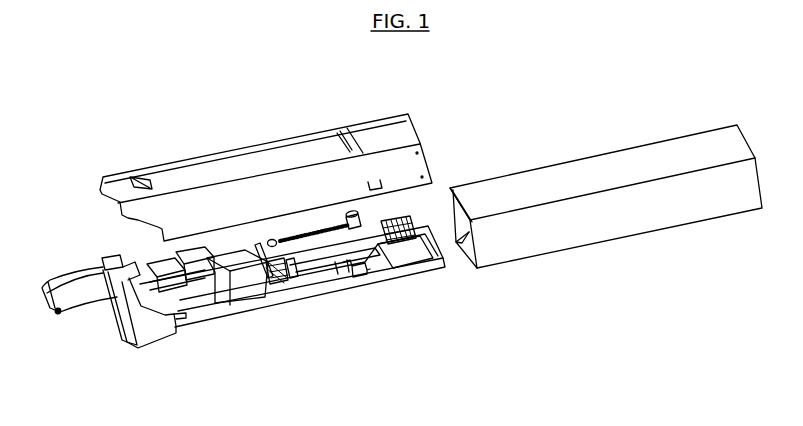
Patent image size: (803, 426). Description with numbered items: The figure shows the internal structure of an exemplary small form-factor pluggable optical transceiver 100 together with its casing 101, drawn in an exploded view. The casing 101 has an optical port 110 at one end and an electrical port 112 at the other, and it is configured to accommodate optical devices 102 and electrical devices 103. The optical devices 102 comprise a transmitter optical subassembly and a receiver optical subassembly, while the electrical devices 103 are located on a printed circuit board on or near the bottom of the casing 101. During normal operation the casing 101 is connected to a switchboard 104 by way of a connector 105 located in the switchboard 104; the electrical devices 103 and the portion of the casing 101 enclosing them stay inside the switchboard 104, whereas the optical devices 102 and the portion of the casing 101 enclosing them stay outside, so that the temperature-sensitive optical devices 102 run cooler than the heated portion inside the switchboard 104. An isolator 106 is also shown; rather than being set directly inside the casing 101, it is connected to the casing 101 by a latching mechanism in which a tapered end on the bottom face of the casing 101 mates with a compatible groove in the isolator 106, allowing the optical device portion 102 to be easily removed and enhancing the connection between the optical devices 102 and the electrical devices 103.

The small form-factor pluggable (SFP) optical transceiver 100 is at (145, 96).
The casing 101 is at (238, 160).
The optical devices 102 is at (242, 294).
The electrical devices 103 is at (343, 262).
The switchboard 104 is at (612, 167).
The connector 105 is at (463, 248).
The isolator 106 is at (261, 300).
The optical port 110 is at (110, 317).
The electrical port 112 is at (397, 218).